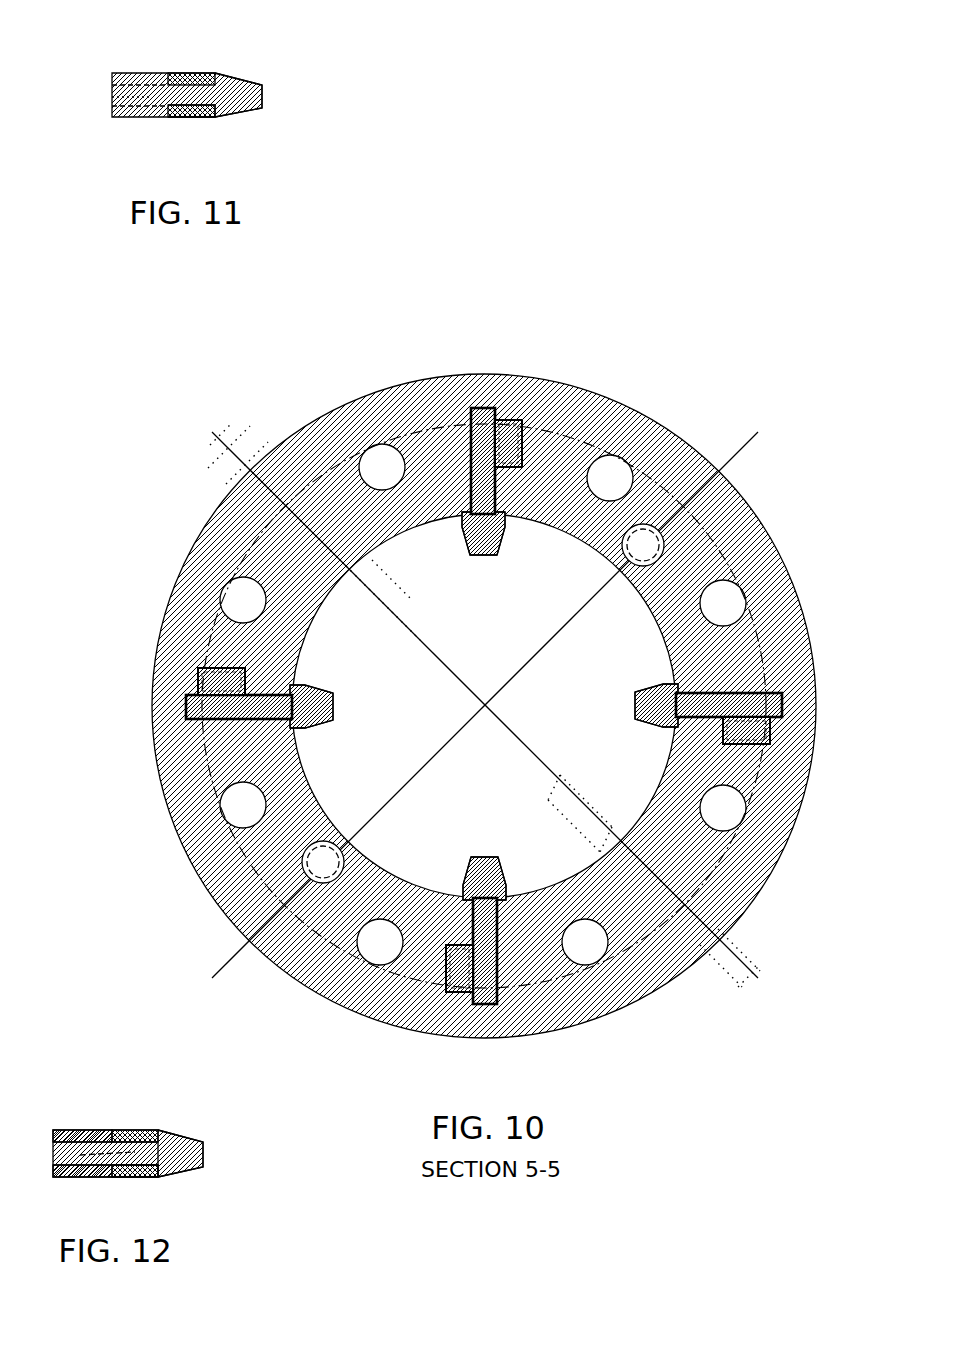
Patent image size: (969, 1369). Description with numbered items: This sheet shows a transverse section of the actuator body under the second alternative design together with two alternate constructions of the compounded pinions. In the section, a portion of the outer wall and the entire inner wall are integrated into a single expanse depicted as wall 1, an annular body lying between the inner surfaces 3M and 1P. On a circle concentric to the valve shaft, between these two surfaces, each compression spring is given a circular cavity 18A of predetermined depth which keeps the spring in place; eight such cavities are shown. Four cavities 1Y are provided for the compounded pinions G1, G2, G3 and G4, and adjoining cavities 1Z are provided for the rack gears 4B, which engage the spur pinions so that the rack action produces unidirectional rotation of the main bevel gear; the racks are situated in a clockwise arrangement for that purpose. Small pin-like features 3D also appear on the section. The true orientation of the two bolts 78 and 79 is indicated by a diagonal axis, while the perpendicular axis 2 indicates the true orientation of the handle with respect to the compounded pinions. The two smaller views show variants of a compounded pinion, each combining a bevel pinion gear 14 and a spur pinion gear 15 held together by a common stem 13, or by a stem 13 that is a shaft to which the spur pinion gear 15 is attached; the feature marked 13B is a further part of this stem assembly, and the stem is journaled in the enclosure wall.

In FIG. 10, the wall 1 is at (183, 785).
In FIG. 10, the axis 2- 2 is at (490, 709).
In FIG. 10, the cavities for compounded pinions 1Y is at (471, 432).
In FIG. 10, the cavities for racks 1Z is at (577, 438).
In FIG. 10, the inner surface 1P is at (583, 412).
In FIG. 10, the inner surface 3M is at (303, 651).
In FIG. 10, the locating pin 3D is at (643, 566).
In FIG. 10, the rack gear 4B is at (220, 676).
In FIG. 10, the circular cavity 18A is at (242, 598).
In FIG. 10, the bolt 78 is at (257, 447).
In FIG. 10, the bolt 79 is at (763, 938).
In FIG. 10, the compounded pinion G1 is at (497, 536).
In FIG. 10, the compounded pinion G2 is at (652, 690).
In FIG. 10, the compounded pinion G3 is at (485, 875).
In FIG. 10, the compounded pinion G4 is at (330, 720).
In FIG. 11, the stem 13 is at (190, 95).
In FIG. 12, the stem 13 is at (140, 1137).
In FIG. 11, the insert bottom piece 13B is at (182, 118).
In FIG. 12, the insert bottom piece 13B is at (132, 1180).
In FIG. 11, the bevel pinion gear 14 is at (238, 95).
In FIG. 12, the bevel pinion gear 14 is at (180, 1155).
In FIG. 11, the spur pinion gear 15 is at (130, 75).
In FIG. 12, the spur pinion gear 15 is at (55, 1128).